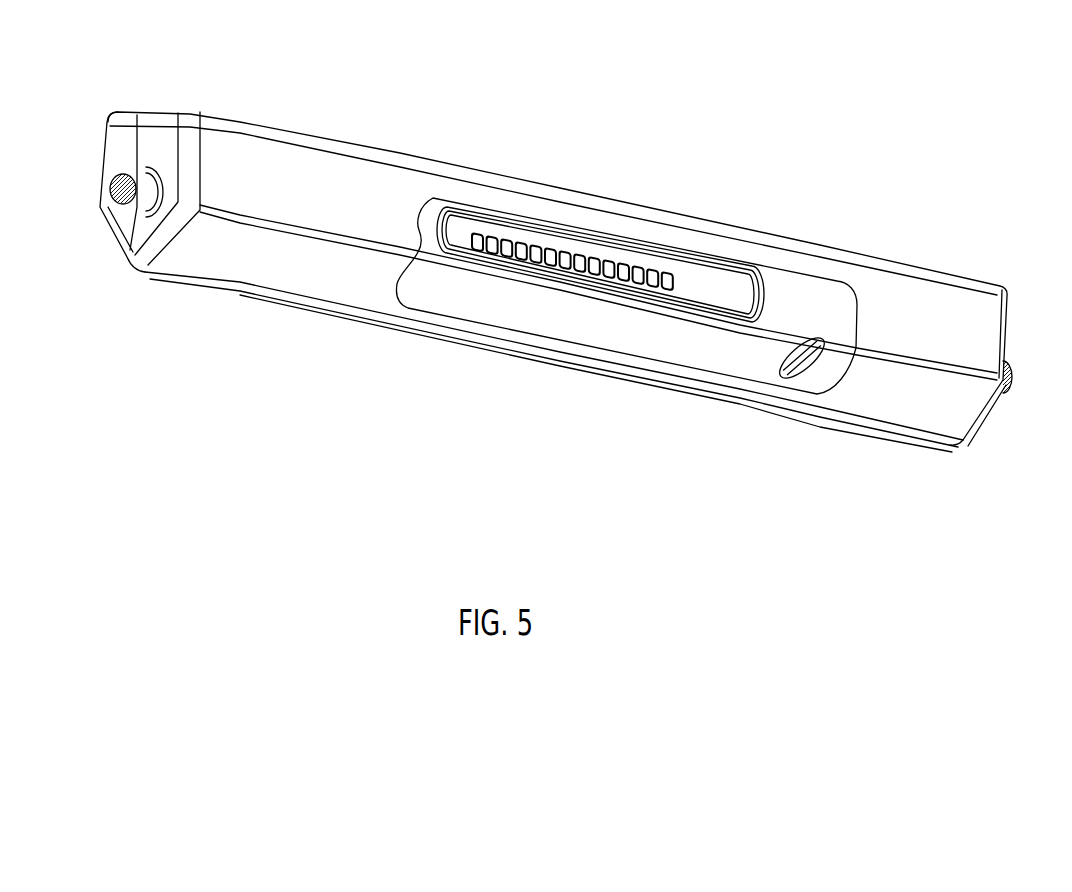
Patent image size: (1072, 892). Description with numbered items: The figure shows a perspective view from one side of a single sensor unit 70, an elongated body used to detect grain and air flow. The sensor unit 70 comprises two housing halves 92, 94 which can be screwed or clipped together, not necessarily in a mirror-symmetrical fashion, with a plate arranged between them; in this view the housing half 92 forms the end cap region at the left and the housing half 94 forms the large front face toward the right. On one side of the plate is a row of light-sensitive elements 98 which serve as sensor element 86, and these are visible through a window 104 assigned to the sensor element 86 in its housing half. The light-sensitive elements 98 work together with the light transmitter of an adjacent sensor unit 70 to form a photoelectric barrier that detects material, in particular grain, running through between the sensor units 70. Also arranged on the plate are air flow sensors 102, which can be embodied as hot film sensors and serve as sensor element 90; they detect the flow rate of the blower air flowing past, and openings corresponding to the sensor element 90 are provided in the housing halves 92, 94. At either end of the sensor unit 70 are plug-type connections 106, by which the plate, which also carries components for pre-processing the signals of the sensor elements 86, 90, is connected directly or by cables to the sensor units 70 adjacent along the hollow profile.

The sensor unit 70 is at (536, 319).
The housing half 92 is at (110, 140).
The plug-type connection 106 is at (123, 250).
The housing half 94 is at (938, 310).
The window 104 is at (730, 285).
The sensor element 86 is at (633, 220).
The light-sensitive elements 98 is at (652, 283).
The sensor element 90 is at (837, 429).
The air flow sensor 102 is at (807, 372).